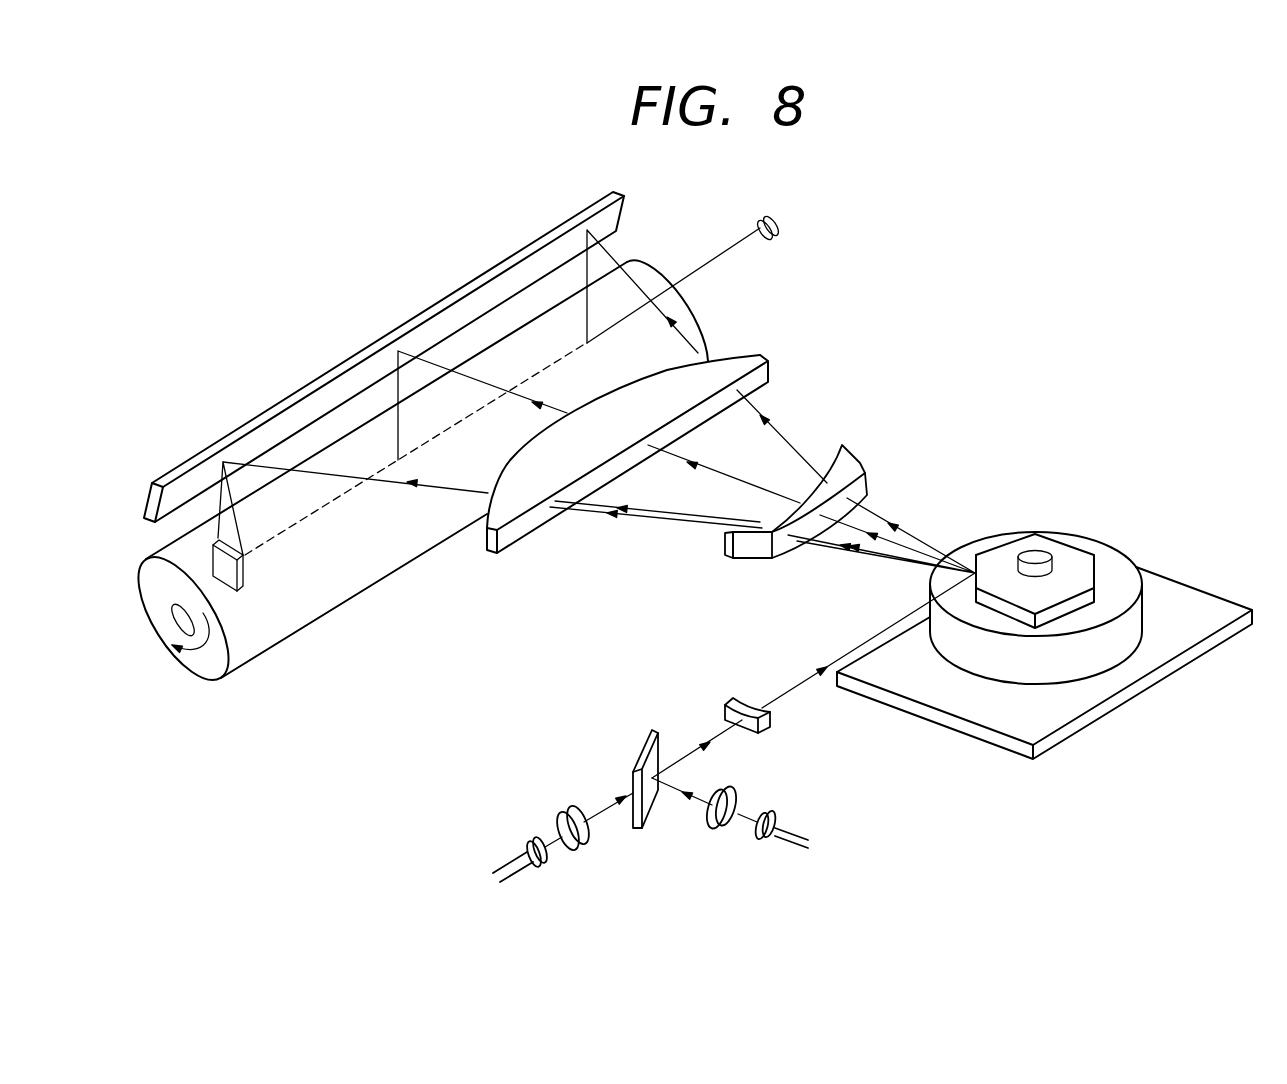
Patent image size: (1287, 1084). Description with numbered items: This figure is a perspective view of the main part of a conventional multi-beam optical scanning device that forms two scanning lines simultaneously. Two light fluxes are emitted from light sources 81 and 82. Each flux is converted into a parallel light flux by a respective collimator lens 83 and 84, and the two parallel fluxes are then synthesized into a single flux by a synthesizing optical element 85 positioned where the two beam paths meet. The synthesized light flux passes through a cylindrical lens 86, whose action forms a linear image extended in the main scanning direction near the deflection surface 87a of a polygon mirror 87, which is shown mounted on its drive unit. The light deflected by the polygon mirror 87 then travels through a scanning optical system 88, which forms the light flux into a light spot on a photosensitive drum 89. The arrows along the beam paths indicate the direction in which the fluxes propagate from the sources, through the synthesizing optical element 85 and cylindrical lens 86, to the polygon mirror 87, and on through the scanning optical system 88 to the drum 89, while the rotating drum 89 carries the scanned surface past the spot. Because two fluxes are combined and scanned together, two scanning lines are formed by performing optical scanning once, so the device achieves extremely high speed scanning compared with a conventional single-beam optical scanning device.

The light source 81 is at (527, 848).
The light source 82 is at (762, 812).
The collimator lens 83 is at (572, 808).
The collimator lens 84 is at (713, 827).
The synthesizing optical element 85 is at (647, 750).
The cylindrical lens 86 is at (727, 697).
The polygon mirror 87 is at (1082, 552).
The deflection surface 87a is at (975, 556).
The scanning optical system 88 is at (799, 316).
The photosensitive drum 89 is at (297, 613).